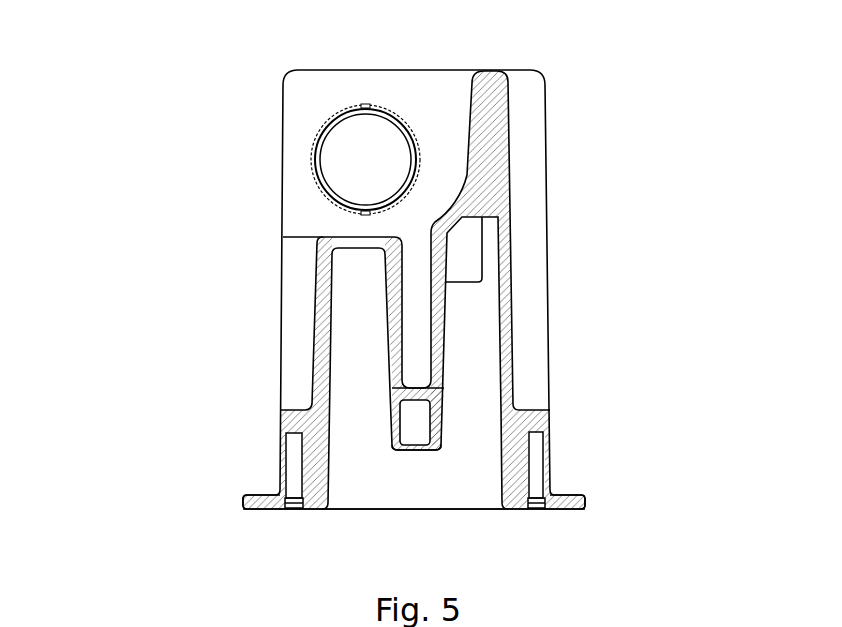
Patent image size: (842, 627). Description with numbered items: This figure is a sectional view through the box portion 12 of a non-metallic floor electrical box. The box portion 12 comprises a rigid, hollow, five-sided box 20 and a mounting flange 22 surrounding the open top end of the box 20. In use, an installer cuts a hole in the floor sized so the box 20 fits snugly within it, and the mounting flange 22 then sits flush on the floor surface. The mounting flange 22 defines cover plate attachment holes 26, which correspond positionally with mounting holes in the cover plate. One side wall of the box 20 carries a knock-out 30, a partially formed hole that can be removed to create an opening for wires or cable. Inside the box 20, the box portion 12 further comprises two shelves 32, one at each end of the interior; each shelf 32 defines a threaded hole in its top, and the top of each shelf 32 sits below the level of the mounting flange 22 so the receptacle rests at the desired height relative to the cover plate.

The box portion 12 is at (188, 128).
The five-sided box 20 is at (533, 135).
The mounting flange 22 is at (587, 502).
The cover plate attachment hole 26 is at (538, 512).
The knock-out 30 is at (335, 165).
The shelf 32 is at (397, 450).